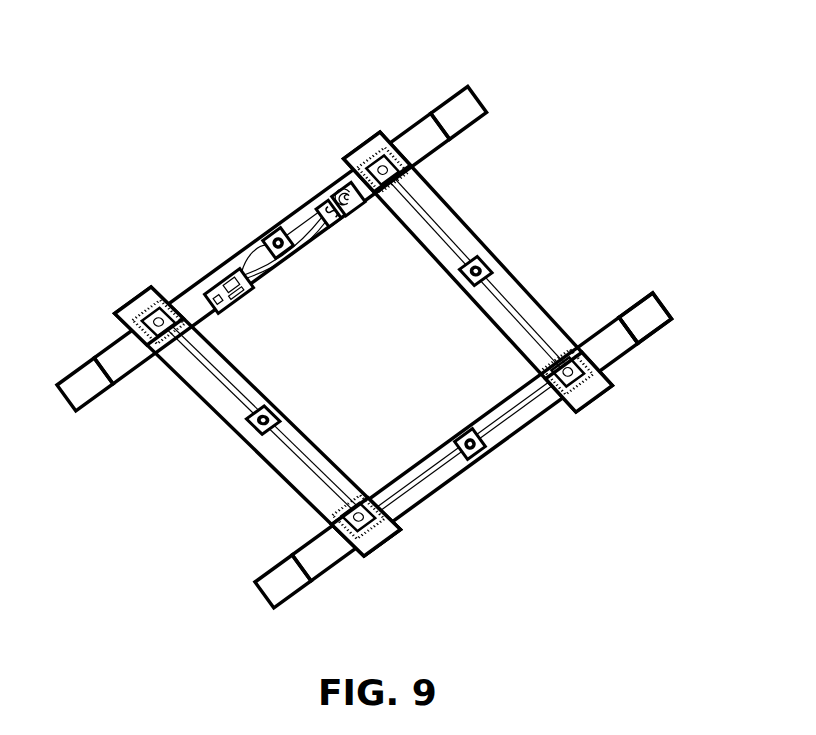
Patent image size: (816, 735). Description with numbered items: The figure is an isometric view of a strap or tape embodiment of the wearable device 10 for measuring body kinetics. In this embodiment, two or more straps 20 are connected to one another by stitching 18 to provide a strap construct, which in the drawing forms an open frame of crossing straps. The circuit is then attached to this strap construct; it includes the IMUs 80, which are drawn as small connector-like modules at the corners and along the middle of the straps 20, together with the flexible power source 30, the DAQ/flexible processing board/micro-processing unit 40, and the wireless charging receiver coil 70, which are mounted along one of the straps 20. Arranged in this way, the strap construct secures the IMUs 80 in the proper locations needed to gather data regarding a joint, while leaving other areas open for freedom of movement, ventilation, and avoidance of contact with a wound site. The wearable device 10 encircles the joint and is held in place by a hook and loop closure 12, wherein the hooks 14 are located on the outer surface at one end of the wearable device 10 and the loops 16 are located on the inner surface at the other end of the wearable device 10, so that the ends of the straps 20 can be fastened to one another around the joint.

The wearable device 10 is at (384, 339).
The hook and loop closure 12 is at (650, 292).
The hooks 14 is at (63, 390).
The loops 16 is at (468, 90).
The stitching 18 is at (370, 560).
The straps 20 is at (241, 251).
The flexible power source 30 is at (321, 205).
The DAQ/flexible processing board/micro-processing unit 40 is at (246, 300).
The wireless charging receiver coil 70 is at (342, 190).
The IMUs 80 is at (381, 134).